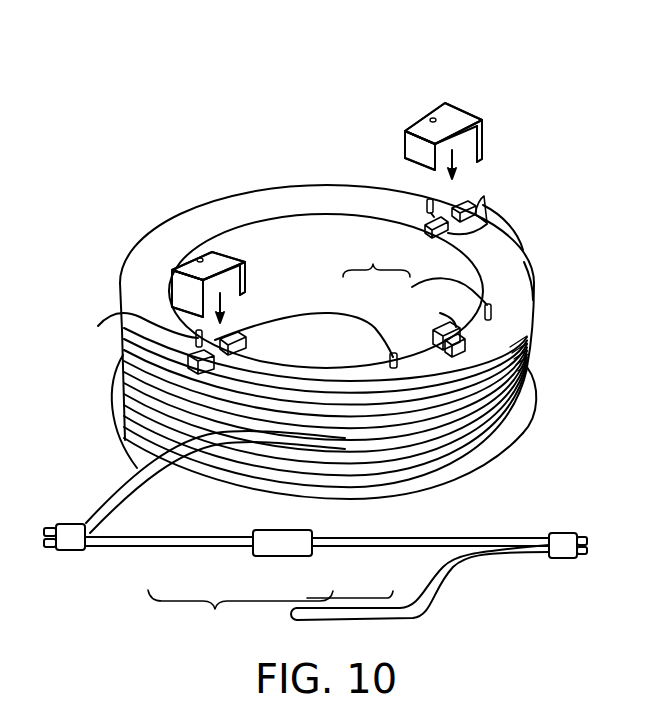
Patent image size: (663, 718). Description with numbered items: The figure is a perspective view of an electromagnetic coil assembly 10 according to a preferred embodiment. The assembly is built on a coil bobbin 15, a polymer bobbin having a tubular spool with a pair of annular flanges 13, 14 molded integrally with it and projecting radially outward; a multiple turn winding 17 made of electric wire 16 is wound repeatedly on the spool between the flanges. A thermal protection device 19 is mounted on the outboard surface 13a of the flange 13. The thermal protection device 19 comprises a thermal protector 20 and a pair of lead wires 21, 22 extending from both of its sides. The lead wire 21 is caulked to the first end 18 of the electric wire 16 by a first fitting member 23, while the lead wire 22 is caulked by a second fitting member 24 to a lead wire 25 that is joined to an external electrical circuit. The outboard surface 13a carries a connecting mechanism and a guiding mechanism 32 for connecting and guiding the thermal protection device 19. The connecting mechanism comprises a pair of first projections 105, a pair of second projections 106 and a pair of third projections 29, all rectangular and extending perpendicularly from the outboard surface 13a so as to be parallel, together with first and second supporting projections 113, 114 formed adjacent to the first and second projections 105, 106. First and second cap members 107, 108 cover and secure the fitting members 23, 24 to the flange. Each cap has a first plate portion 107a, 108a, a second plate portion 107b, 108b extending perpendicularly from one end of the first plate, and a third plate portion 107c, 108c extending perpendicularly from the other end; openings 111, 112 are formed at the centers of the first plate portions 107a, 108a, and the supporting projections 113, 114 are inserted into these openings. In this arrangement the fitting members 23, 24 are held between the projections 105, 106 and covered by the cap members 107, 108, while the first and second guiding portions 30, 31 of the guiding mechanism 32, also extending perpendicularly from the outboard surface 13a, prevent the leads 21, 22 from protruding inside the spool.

The electromagnetic coil assembly 10 is at (319, 78).
The flange 13 is at (510, 260).
The outboard surface of flange 13a is at (510, 283).
The flange 14 is at (113, 386).
The coil bobbin 15 is at (505, 228).
The electric wire 16 is at (497, 417).
The multiple turn winding 17 is at (538, 351).
The first end of electric wire 18 is at (50, 526).
The thermal protection device 19 is at (240, 614).
The thermal protector 20 is at (283, 556).
The lead wire 21 is at (166, 548).
The lead wire 22 is at (378, 546).
The first fitting member 23 is at (70, 549).
The second fitting member 24 is at (563, 558).
The lead wire 25 is at (450, 570).
The third projections 29 is at (440, 327).
The first guiding portion 30 is at (391, 355).
The second guiding portion 31 is at (413, 287).
The guiding mechanism 32 is at (376, 258).
The first projections 105 is at (248, 352).
The second projections 106 is at (466, 196).
The first cap member 107 is at (189, 260).
The first plate portion 107a is at (232, 254).
The second plate portion 107b is at (183, 289).
The third plate portion 107c is at (244, 281).
The second cap member 108 is at (434, 122).
The first plate portion 108a is at (458, 120).
The second plate portion 108b is at (484, 141).
The third plate portion 108c is at (410, 151).
The opening 111 is at (198, 258).
The opening 112 is at (430, 119).
The first supporting projection 113 is at (131, 330).
The second supporting projection 114 is at (408, 200).